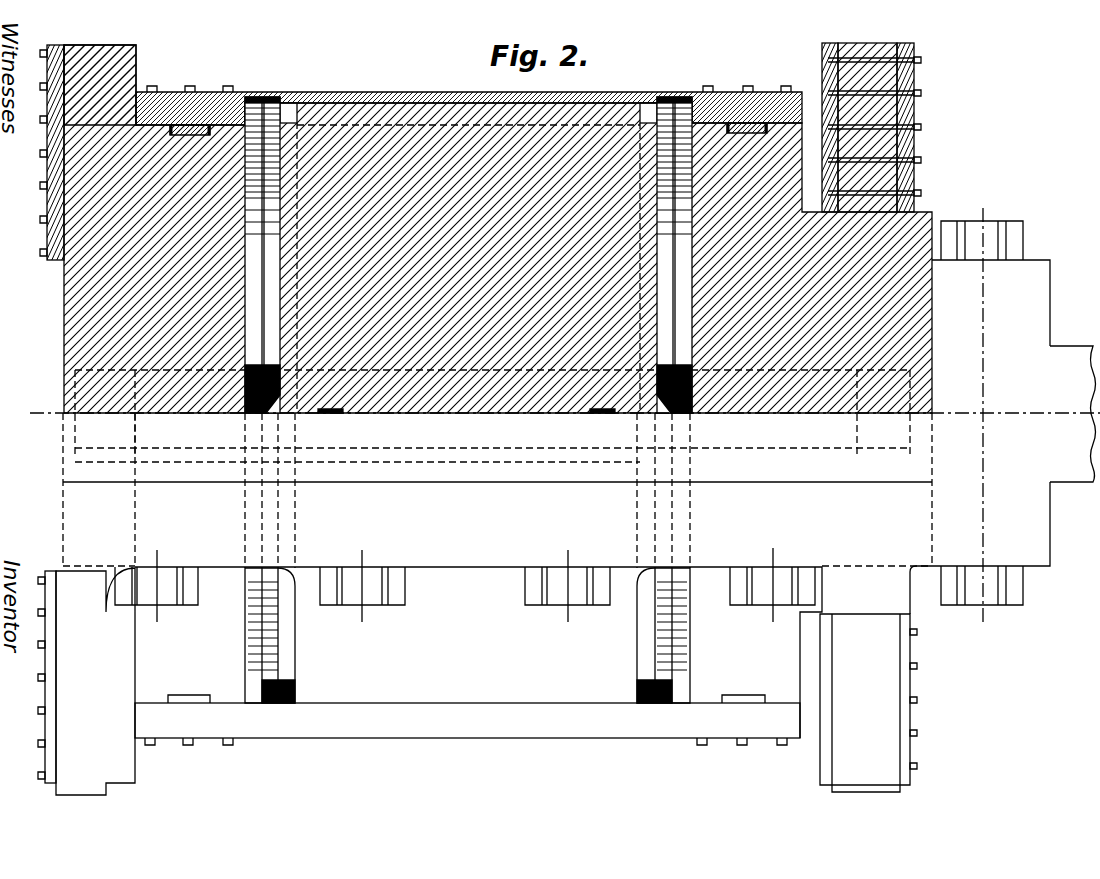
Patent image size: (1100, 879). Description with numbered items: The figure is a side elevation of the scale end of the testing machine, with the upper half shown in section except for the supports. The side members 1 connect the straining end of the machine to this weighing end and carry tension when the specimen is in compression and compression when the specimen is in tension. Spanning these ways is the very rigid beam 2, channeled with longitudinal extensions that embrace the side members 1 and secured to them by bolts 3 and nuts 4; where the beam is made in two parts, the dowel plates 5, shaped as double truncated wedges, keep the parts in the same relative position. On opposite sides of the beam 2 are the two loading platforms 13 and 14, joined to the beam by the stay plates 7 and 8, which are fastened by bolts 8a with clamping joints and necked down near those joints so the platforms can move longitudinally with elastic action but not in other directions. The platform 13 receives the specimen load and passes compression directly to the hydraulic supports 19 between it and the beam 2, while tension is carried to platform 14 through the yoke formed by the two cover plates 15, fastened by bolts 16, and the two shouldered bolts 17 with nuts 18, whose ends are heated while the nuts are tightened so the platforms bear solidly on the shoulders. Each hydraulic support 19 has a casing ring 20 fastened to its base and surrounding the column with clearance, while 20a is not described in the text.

The side members 1 is at (1065, 340).
The beam 2 is at (415, 92).
The bolts 3 is at (990, 218).
The nuts 4 is at (1025, 242).
The dowel plates 5 is at (596, 416).
The stay plate 7 is at (822, 77).
The stay plate 8 is at (47, 207).
The bolts 8a is at (42, 255).
The loading platform 13 is at (866, 46).
The loading platform 14 is at (96, 47).
The cover plates 15 is at (315, 92).
The bolts 16 is at (192, 88).
The shouldered bolts 17 is at (438, 460).
The nuts 18 is at (80, 466).
The hydraulic supports 19 is at (660, 97).
The casing ring 20 is at (912, 72).
The bolt heads 20a is at (922, 56).